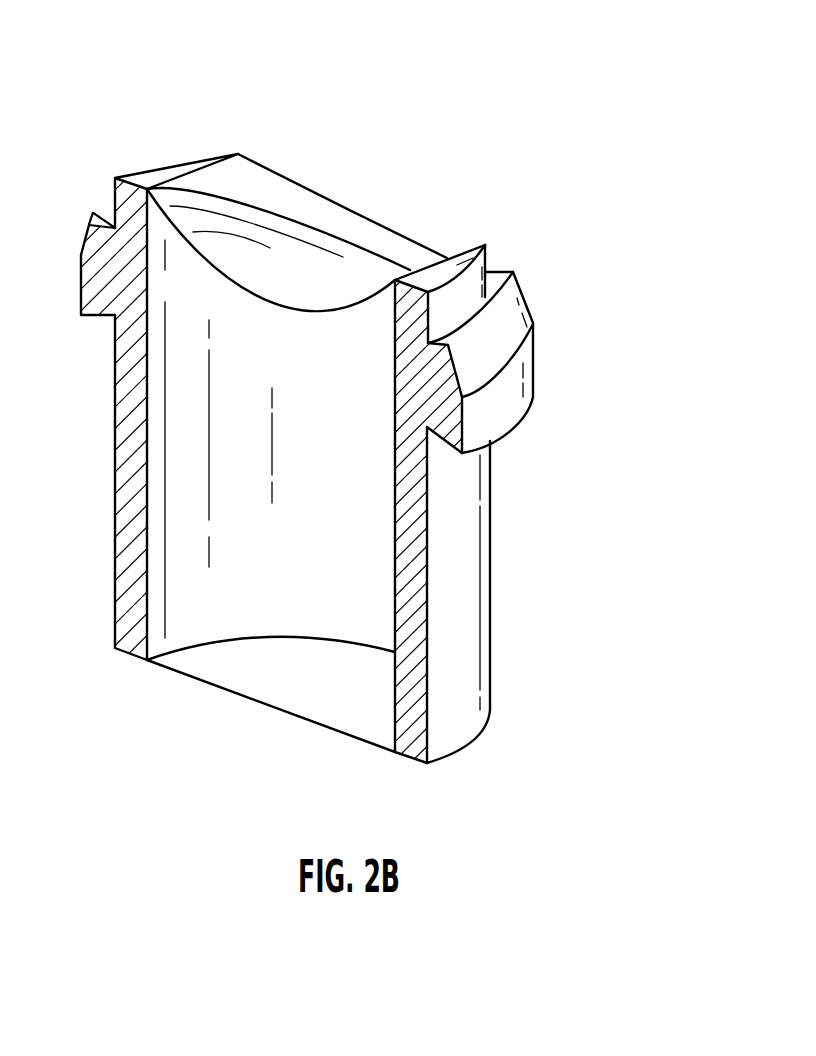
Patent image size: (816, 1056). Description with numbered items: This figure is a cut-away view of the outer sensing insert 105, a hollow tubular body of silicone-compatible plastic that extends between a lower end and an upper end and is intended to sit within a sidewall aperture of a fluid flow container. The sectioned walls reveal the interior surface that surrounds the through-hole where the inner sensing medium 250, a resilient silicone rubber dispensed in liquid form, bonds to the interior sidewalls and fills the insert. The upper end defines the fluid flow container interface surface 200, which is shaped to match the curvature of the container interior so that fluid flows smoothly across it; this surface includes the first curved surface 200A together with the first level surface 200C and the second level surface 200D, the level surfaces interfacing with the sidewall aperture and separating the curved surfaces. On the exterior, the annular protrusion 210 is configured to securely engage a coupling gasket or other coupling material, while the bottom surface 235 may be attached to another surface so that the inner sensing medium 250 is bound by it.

The fluid flow container interface surface 200 is at (335, 193).
The first curved surface 200A is at (410, 252).
The first level surface 200C is at (485, 246).
The second level surface 200D is at (155, 171).
The annular protrusion 210 is at (500, 397).
The outer sensing insert 105 is at (460, 632).
The bottom surface 235 is at (133, 654).
The inner sensing medium 250 is at (353, 535).